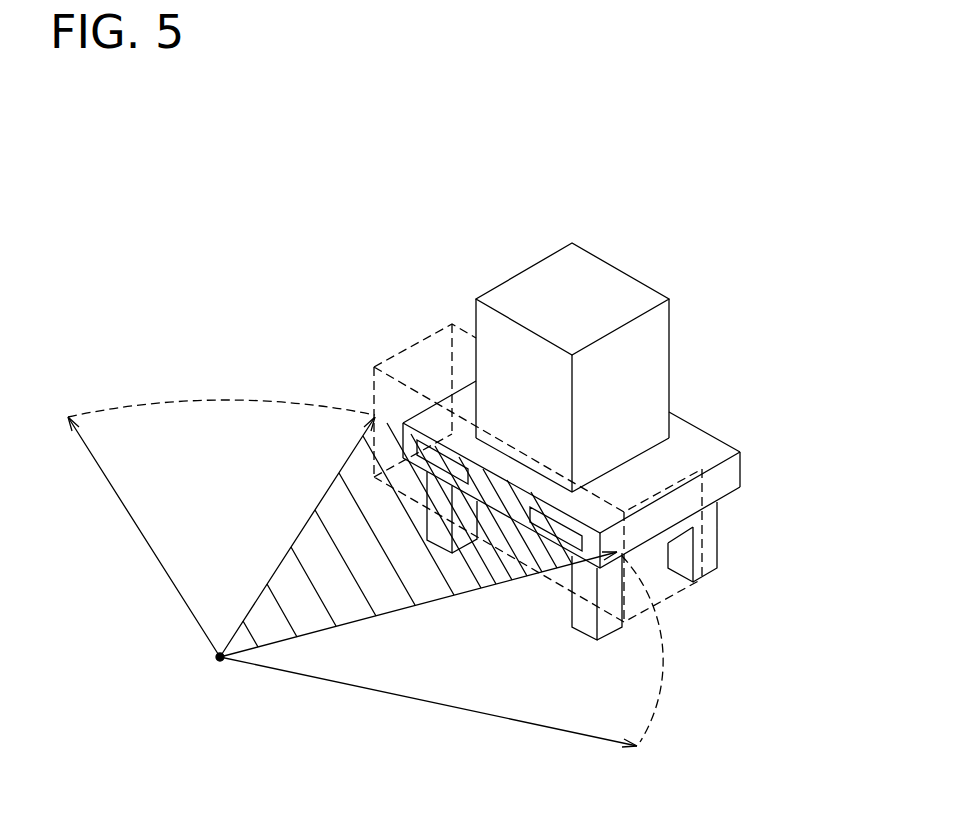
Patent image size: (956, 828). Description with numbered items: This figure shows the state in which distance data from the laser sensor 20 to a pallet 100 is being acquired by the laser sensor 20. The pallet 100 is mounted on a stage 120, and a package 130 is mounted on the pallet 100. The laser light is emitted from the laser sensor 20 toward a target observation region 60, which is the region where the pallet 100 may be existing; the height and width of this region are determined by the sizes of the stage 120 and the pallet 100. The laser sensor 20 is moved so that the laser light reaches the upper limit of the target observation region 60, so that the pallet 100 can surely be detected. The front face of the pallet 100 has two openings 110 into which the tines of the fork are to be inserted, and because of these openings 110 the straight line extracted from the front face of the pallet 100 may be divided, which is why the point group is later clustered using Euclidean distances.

The laser sensor 20 is at (220, 662).
The target observation region 60 is at (400, 385).
The pallet 100 is at (717, 433).
The openings 110 is at (543, 520).
The stage 120 is at (707, 547).
The package 130 is at (652, 343).